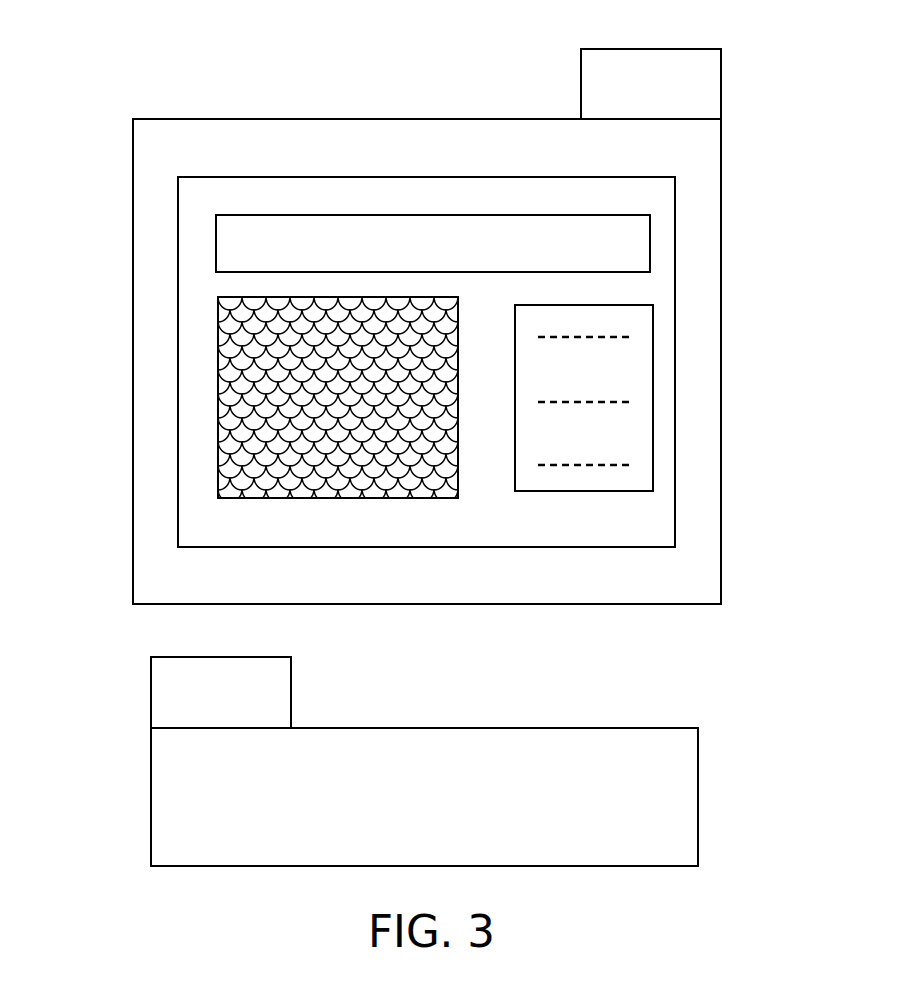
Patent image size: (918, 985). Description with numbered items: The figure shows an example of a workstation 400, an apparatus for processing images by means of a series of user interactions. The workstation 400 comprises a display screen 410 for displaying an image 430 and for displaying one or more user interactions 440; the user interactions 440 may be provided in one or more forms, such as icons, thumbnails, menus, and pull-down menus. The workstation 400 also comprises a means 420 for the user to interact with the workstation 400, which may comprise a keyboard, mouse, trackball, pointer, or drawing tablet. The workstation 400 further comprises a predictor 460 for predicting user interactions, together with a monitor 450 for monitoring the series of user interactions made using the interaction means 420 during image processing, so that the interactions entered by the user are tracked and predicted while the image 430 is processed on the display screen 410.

The workstation 400 is at (134, 84).
The display screen 410 is at (143, 167).
The means for the user to interact 420 is at (152, 798).
The image 430 is at (218, 366).
The user interactions 440 is at (653, 318).
The monitor 450 is at (152, 694).
The predictor 460 is at (712, 85).